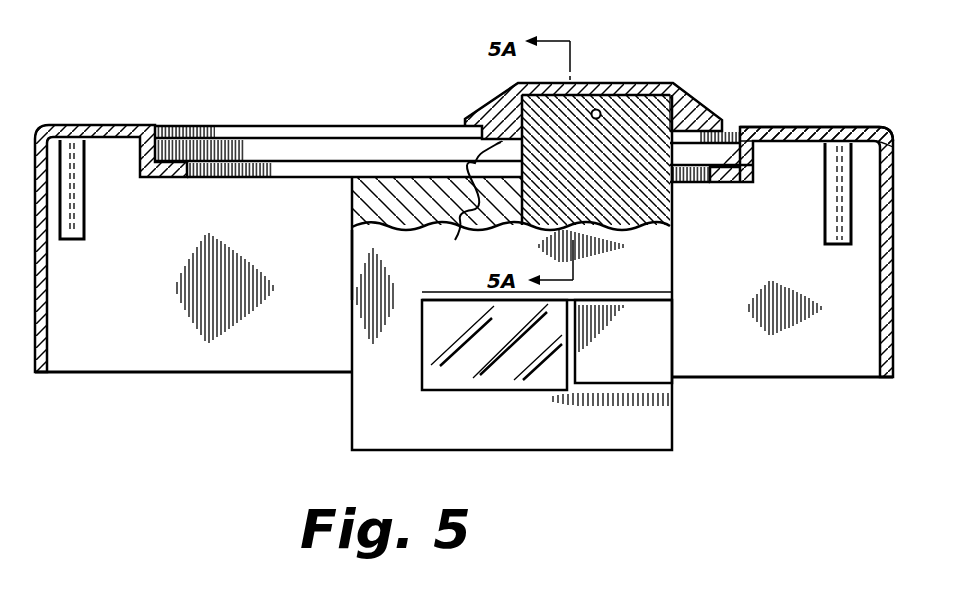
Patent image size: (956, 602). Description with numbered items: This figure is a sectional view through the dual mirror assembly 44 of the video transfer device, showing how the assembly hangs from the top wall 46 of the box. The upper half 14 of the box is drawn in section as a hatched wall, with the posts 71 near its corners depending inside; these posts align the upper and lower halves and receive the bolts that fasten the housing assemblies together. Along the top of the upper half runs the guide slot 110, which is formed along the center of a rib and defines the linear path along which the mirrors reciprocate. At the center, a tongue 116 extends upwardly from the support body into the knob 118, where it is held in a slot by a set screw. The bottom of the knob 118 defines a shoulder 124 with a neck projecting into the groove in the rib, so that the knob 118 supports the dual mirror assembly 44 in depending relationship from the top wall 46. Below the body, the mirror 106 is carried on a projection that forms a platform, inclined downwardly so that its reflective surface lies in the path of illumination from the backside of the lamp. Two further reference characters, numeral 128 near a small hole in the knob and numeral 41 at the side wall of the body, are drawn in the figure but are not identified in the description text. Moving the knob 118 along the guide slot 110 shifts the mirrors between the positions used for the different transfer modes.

The upper half 14 is at (890, 380).
The top wall 46 is at (781, 128).
The post 71 is at (74, 240).
The guide slot 110 is at (215, 178).
The tongue 116 is at (648, 150).
The knob 118 is at (690, 92).
The hole 128 is at (600, 108).
The wall 41 is at (352, 248).
The dual mirror assembly 44 is at (674, 277).
The shoulder 124 is at (455, 228).
The mirror 106 is at (476, 374).